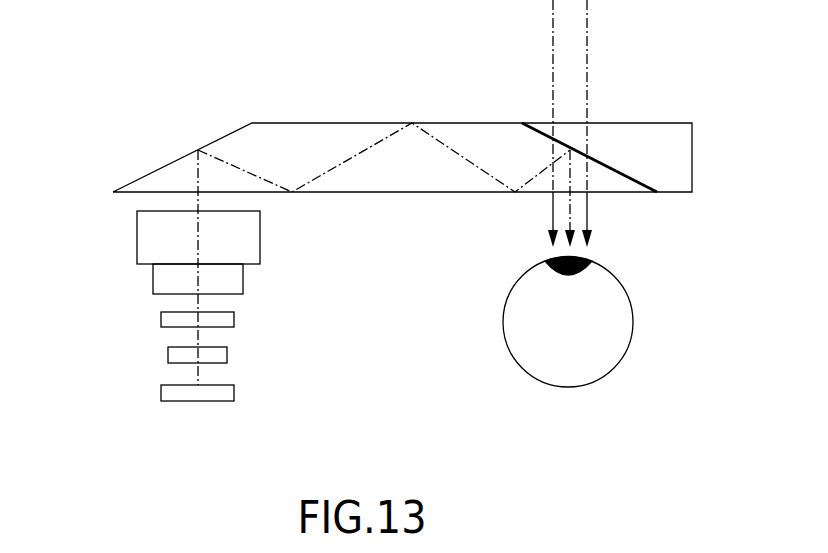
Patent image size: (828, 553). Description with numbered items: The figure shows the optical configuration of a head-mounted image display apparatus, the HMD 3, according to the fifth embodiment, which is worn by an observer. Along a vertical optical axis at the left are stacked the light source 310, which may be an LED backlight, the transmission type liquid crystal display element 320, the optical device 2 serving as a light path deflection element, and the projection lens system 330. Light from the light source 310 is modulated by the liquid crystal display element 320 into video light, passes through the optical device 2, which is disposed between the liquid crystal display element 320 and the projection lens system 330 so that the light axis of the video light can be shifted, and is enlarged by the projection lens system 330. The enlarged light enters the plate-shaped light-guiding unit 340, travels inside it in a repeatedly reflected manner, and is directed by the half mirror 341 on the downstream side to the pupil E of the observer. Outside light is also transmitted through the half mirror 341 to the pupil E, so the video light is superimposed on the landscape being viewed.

The HMD (image display apparatus) 3 is at (228, 72).
The light-guiding unit 340 is at (334, 123).
The half mirror 341 is at (618, 165).
The projection lens system 330 is at (137, 232).
The optical device 2 is at (161, 318).
The liquid crystal display element 320 is at (168, 352).
The light source 310 is at (161, 392).
The pupil E is at (553, 363).